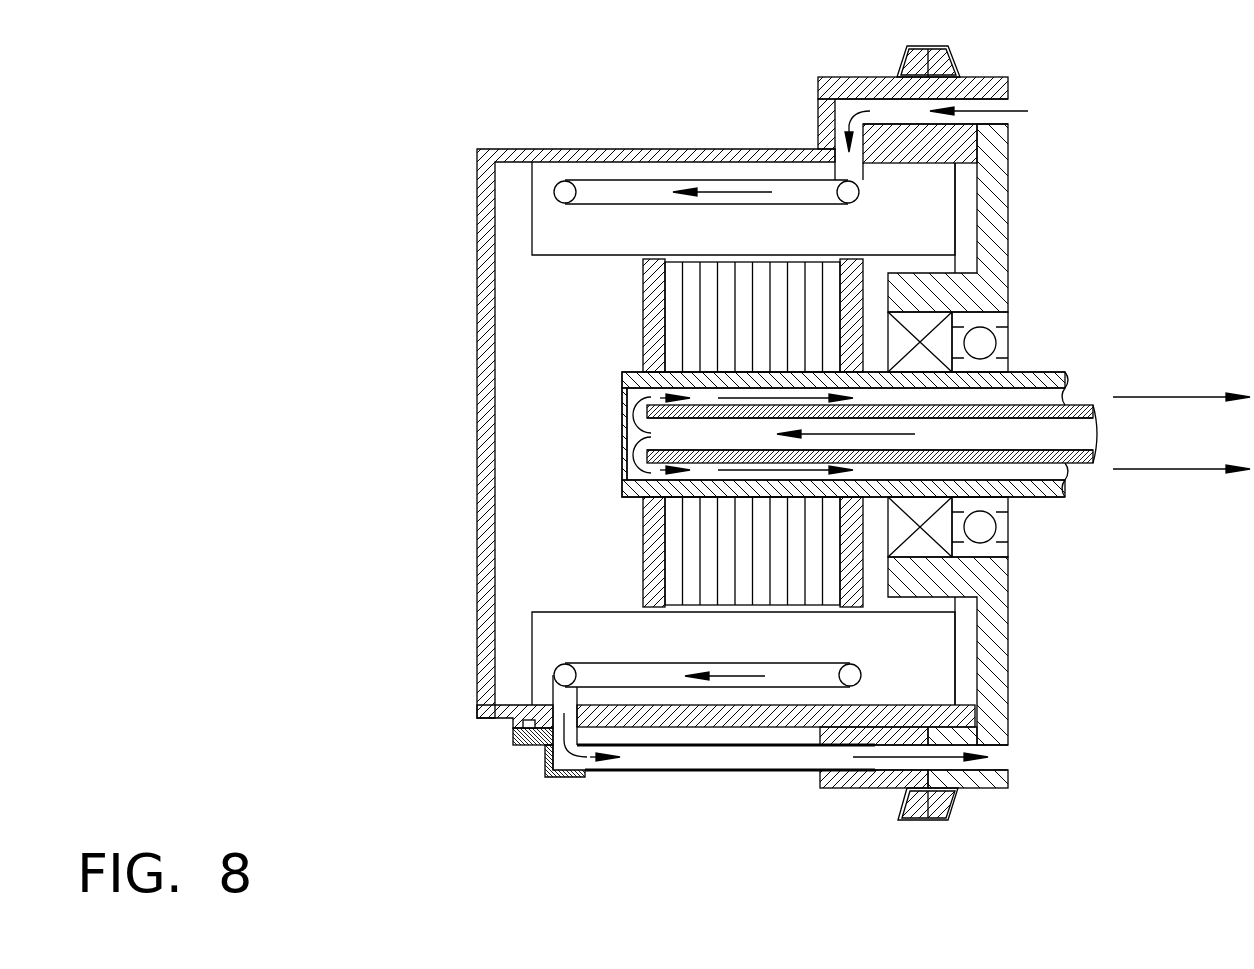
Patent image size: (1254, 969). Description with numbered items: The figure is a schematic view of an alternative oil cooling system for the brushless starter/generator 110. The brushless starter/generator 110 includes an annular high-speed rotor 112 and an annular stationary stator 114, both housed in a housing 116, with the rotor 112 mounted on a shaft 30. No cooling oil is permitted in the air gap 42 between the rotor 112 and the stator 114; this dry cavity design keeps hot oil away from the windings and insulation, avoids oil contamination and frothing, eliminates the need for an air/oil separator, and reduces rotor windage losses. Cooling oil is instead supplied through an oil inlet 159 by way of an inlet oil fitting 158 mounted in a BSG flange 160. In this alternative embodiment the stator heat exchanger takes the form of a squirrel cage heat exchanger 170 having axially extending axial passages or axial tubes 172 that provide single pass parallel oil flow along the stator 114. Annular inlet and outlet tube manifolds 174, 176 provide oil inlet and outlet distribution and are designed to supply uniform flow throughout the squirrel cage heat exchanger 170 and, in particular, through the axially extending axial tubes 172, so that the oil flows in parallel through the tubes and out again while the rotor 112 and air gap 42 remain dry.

The shaft 30 is at (1168, 397).
The air gap 42 is at (743, 658).
The brushless starter/generator 110 is at (585, 808).
The rotor 112 is at (642, 316).
The stator 114 is at (832, 241).
The housing 116 is at (668, 149).
The inlet oil fitting 158 is at (1000, 106).
The oil inlet 159 is at (832, 100).
The BSG flange 160 is at (933, 46).
The squirrel cage heat exchanger 170 is at (600, 180).
The axial tubes 172 is at (637, 194).
The inlet tube manifold 174 is at (856, 198).
The outlet tube manifold 176 is at (565, 190).